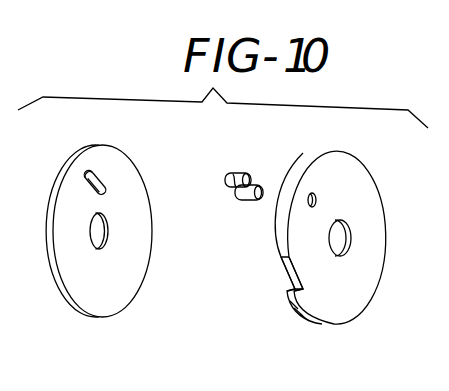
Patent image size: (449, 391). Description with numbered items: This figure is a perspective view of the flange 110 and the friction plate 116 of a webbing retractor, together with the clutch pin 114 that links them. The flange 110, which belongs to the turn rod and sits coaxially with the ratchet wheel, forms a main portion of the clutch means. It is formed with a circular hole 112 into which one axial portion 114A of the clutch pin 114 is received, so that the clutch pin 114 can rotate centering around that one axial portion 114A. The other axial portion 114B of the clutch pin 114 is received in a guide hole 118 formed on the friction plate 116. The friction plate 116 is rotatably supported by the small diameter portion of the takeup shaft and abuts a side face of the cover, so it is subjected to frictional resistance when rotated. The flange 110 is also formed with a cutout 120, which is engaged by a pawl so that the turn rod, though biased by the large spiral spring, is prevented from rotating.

The flange 110 is at (362, 176).
The circular hole 112 is at (317, 201).
The clutch pin 114 is at (234, 198).
The one axial portion 114A is at (252, 201).
The other axial portion 114B is at (233, 175).
The friction plate 116 is at (130, 180).
The guide hole 118 is at (98, 182).
The cutout 120 is at (288, 270).